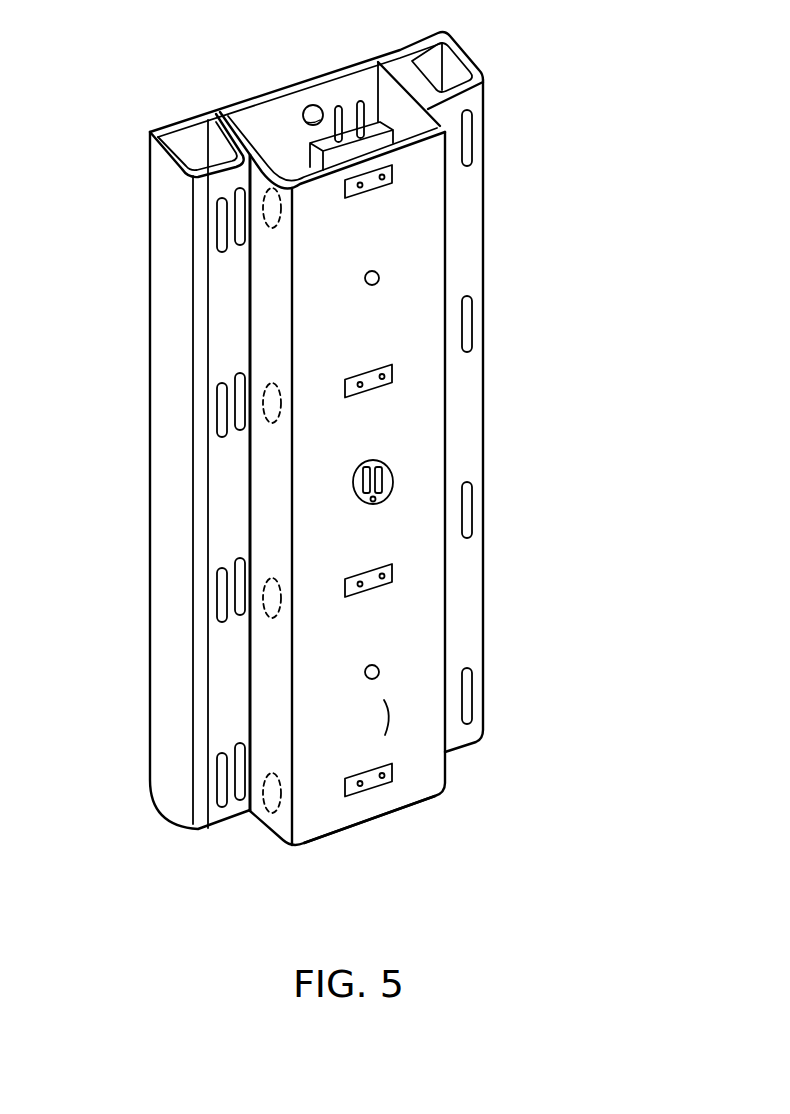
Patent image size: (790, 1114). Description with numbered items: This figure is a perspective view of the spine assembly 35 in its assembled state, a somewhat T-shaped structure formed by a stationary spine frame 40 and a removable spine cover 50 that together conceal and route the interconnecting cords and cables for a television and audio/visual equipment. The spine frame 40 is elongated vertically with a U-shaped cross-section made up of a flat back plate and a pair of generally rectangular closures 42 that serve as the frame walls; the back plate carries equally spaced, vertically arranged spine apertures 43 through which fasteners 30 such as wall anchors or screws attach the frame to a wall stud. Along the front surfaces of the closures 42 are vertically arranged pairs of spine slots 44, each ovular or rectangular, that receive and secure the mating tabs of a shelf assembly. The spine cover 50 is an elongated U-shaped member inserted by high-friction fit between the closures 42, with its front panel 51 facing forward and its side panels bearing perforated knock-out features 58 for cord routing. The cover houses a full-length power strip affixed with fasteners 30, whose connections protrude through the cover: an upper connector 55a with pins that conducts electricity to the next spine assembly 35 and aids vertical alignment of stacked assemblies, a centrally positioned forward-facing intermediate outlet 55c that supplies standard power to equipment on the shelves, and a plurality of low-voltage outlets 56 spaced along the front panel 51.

The spine assembly 35 is at (102, 95).
The spine frame 40 is at (249, 95).
The closures 42 is at (474, 96).
The spine apertures 43 is at (313, 105).
The spine slots 44 is at (470, 138).
The spine cover 50 is at (386, 815).
The front panel 51 is at (386, 716).
The upper connector 55a is at (360, 101).
The intermediate outlet 55c is at (394, 482).
The low-voltage outlets 56 is at (392, 175).
The knock-out features 58 is at (263, 205).
The fasteners 30 is at (379, 278).